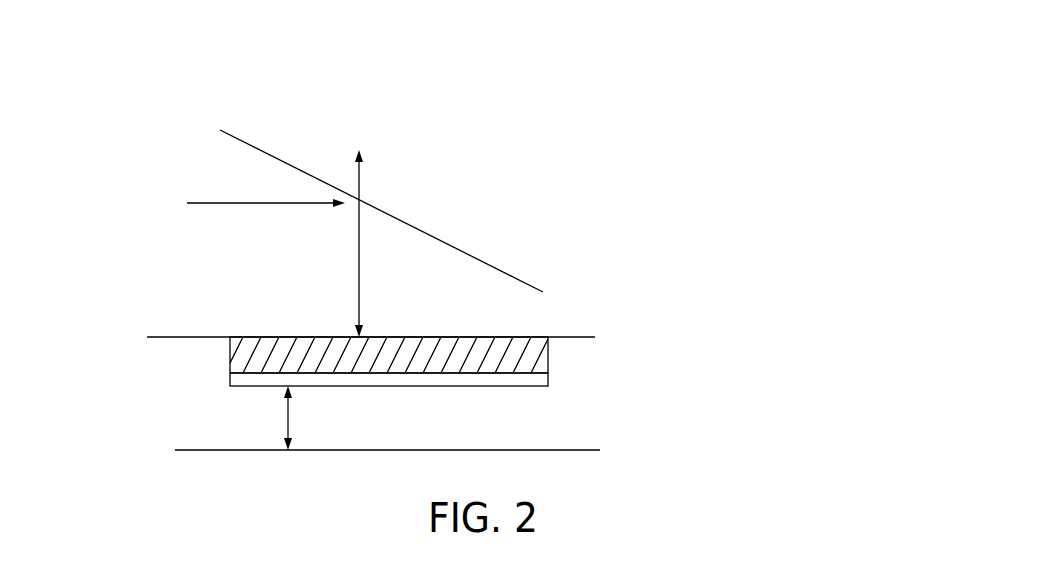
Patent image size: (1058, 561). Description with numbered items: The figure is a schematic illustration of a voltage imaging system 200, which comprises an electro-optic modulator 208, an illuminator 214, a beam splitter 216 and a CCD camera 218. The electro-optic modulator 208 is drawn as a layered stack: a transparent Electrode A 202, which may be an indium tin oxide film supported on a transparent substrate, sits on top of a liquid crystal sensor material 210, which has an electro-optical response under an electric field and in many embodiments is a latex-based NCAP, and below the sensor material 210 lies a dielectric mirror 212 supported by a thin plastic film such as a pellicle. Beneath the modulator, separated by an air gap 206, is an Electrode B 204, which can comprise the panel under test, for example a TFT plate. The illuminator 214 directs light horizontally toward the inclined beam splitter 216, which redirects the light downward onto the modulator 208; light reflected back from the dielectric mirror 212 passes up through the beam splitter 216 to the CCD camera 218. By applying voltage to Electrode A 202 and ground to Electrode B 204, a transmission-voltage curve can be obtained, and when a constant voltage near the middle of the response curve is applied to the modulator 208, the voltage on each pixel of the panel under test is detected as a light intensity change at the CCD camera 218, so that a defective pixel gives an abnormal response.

The voltage imaging system 200 is at (572, 116).
The Electrode A 202 is at (329, 337).
The Electrode B 204 is at (331, 450).
The Air Gap 206 is at (363, 418).
The electro-optic modulator 208 is at (583, 365).
The sensor material 210 is at (535, 352).
The dielectric mirror 212 is at (535, 379).
The illuminator 214 is at (204, 212).
The beam splitter 216 is at (303, 202).
The CCD camera 218 is at (385, 231).